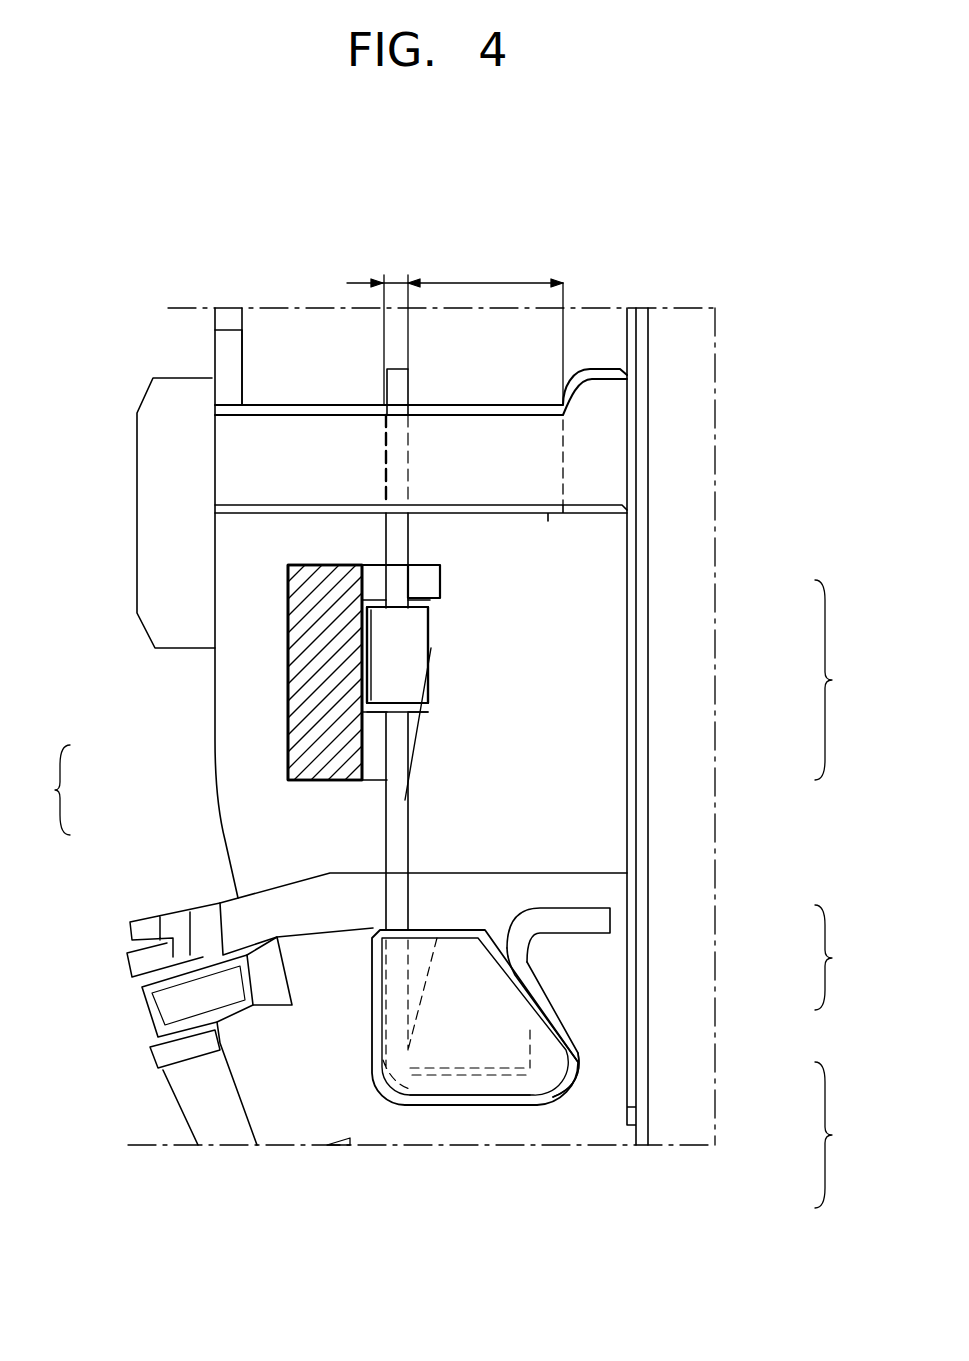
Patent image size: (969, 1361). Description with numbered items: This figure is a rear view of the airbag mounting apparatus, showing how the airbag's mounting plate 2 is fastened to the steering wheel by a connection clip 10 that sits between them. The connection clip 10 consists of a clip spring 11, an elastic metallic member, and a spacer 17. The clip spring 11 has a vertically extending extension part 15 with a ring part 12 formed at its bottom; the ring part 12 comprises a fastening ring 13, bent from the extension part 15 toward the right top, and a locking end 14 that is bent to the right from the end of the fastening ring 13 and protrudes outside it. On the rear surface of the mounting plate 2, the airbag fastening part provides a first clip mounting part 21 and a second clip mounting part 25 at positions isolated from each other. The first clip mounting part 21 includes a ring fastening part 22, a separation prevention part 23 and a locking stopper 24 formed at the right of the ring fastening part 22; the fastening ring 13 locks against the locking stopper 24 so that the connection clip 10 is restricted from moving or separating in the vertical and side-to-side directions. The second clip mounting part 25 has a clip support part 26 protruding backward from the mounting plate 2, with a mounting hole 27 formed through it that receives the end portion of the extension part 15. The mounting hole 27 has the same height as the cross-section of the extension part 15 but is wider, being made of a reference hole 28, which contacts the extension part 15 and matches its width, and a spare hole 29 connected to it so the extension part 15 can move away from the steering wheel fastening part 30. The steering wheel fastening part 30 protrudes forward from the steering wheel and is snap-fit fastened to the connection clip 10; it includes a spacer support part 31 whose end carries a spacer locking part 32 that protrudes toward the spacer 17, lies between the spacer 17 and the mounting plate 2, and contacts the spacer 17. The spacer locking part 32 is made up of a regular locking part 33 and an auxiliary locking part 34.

The mounting plate 2 is at (677, 432).
The connection clip 10 is at (43, 790).
The clip spring 11 is at (376, 813).
The ring part 12 is at (840, 957).
The fastening ring 13 is at (540, 1007).
The locking end 14 is at (603, 920).
The extension part 15 is at (393, 828).
The spacer 17 is at (390, 655).
The first clip mounting part 21 is at (622, 1069).
The ring fastening part 22 is at (483, 1038).
The separation prevention part 23 is at (497, 1103).
The locking stopper 24 is at (608, 1035).
The second clip mounting part 25 is at (470, 180).
The clip support part 26 is at (337, 447).
The mounting hole 27 is at (387, 208).
The reference hole 28 is at (395, 282).
The spare hole 29 is at (483, 282).
The steering wheel fastening part 30 is at (270, 584).
The spacer support part 31 is at (305, 627).
The spacer locking part 32 is at (843, 680).
The regular locking part 33 is at (410, 650).
The auxiliary locking part 34 is at (377, 582).